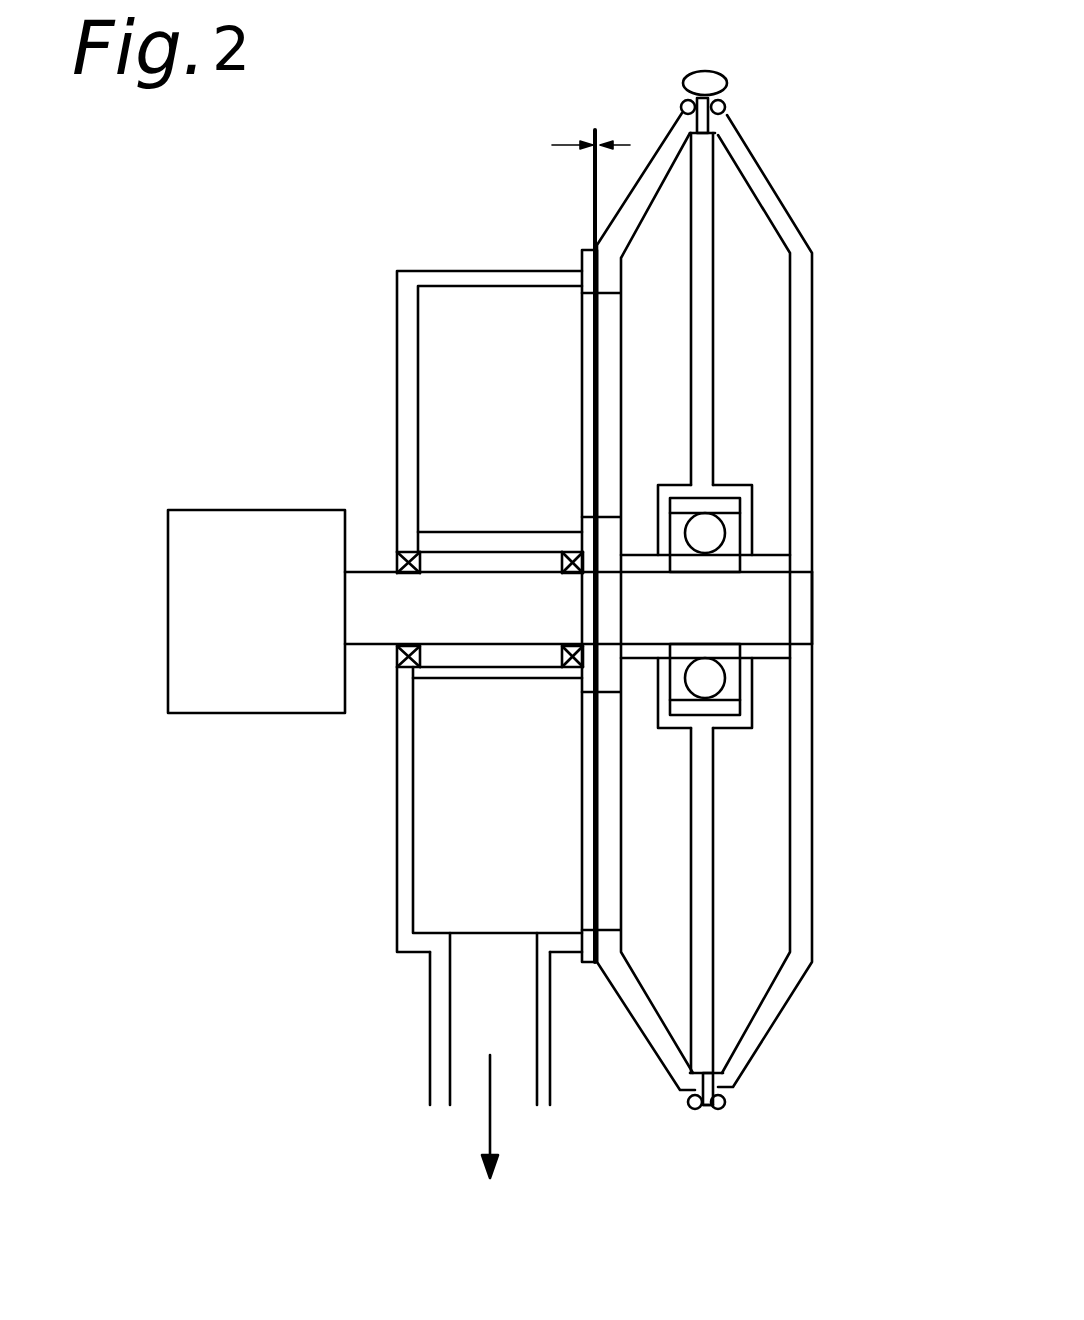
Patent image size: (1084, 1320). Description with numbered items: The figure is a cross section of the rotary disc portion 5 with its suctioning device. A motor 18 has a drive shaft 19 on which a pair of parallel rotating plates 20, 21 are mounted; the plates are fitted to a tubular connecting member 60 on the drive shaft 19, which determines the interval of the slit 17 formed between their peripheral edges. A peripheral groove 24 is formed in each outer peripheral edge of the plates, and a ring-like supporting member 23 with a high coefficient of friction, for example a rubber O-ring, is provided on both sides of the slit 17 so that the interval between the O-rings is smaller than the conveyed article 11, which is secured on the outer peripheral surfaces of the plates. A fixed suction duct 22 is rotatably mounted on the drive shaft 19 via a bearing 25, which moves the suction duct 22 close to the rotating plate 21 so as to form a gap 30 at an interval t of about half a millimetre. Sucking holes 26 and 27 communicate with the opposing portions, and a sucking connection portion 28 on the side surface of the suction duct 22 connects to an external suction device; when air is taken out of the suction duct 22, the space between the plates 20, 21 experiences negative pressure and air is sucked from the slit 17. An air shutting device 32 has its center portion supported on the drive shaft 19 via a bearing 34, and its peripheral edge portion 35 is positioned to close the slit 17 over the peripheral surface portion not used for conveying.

The rotary disc portion 5 is at (350, 317).
The article 11 is at (724, 82).
The slit 17 is at (708, 1105).
The motor 18 is at (258, 697).
The drive shaft 19 is at (767, 590).
The rotating plate 20 is at (785, 998).
The rotating plate 21 is at (643, 1007).
The suction duct 22 is at (397, 787).
The supporting member 23 is at (690, 1102).
The peripheral groove 24 is at (683, 116).
The bearing 25 is at (410, 552).
The sucking hole 26 is at (612, 435).
The sucking hole 27 is at (580, 377).
The sucking connection portion 28 is at (447, 1022).
The gap 30 is at (588, 243).
The air shutting device 32 is at (712, 832).
The bearing 34 is at (733, 505).
The peripheral edge portion 35 is at (713, 137).
The tubular connecting member 60 is at (760, 652).